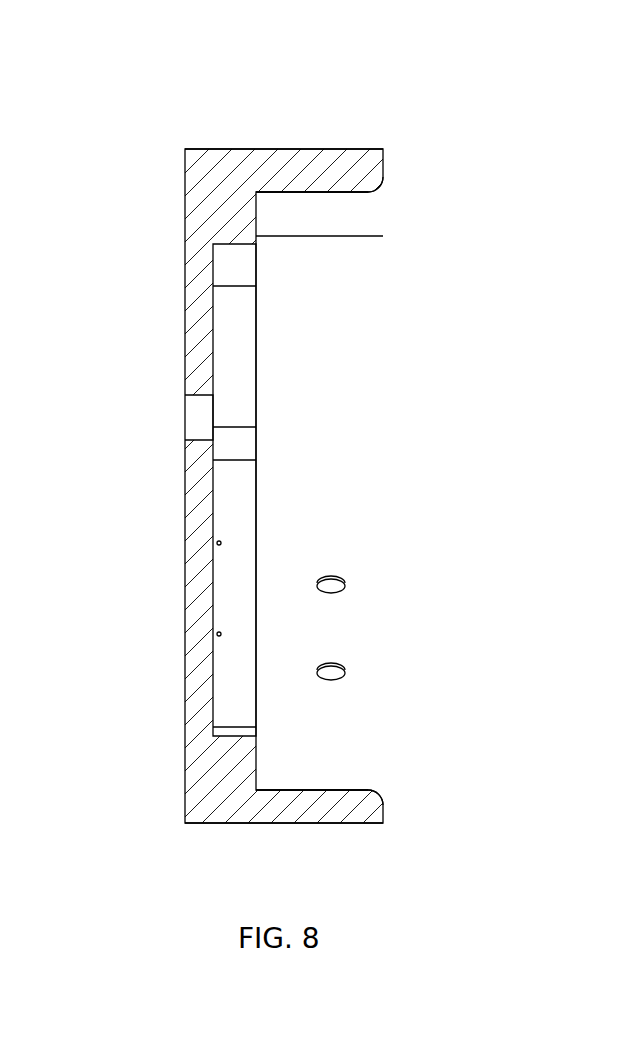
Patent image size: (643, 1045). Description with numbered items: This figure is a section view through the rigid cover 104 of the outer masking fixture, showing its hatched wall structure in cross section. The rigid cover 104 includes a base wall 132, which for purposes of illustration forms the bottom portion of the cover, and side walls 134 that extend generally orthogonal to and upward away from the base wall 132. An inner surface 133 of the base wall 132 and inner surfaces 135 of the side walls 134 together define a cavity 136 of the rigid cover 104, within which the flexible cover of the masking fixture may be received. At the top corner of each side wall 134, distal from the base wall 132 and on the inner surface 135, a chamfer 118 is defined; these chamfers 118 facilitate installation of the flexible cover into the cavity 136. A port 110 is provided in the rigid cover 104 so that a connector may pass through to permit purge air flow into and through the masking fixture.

The rigid cover 104 is at (172, 135).
The port 110 is at (195, 420).
The chamfer 118 is at (373, 188).
The base wall 132 is at (202, 343).
The inner surface of the base wall 133 is at (215, 364).
The side wall 134 is at (345, 160).
The inner surface of the sidewall 135 is at (295, 192).
The cavity 136 is at (420, 278).